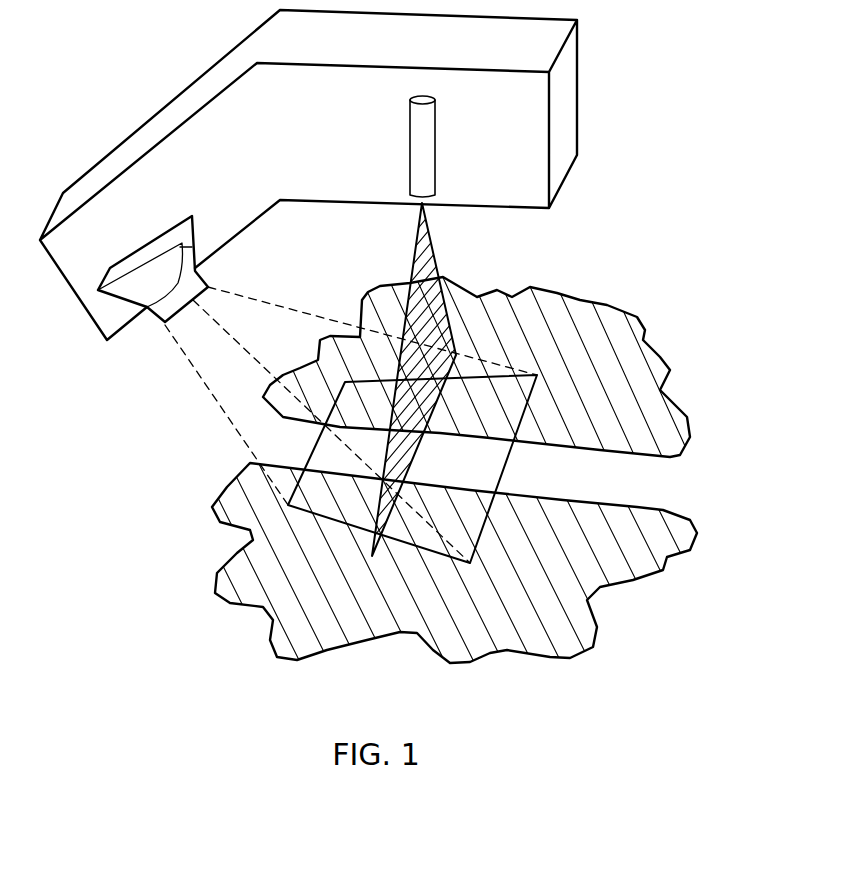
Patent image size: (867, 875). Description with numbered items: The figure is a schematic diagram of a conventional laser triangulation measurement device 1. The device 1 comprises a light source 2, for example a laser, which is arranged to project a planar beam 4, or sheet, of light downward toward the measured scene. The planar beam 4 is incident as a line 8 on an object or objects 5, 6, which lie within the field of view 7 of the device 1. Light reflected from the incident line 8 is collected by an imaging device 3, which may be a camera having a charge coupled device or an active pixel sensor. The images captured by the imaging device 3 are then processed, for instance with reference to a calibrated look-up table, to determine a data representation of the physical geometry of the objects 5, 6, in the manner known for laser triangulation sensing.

The laser triangulation measurement device 1 is at (253, 123).
The light source 2 is at (435, 145).
The imaging device 3 is at (196, 232).
The planar beam 4 is at (360, 293).
The object 5 is at (653, 372).
The object 6 is at (613, 567).
The field of view 7 is at (330, 450).
The line 8 is at (503, 363).